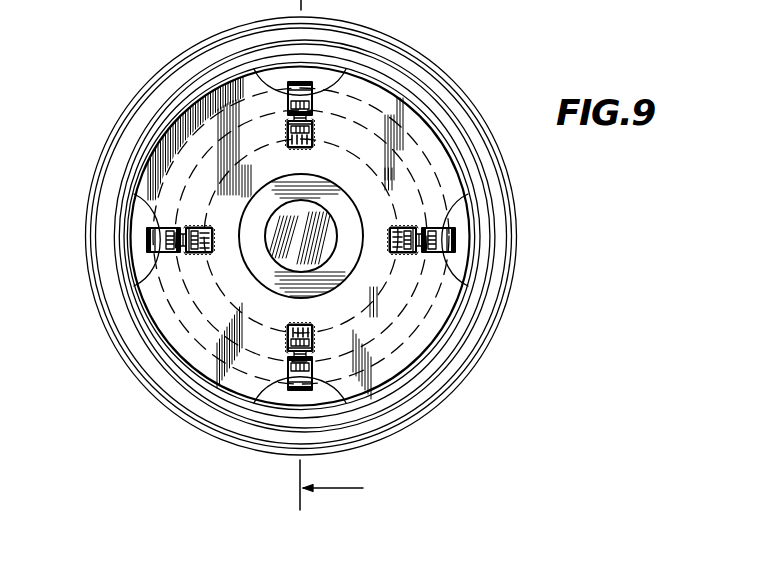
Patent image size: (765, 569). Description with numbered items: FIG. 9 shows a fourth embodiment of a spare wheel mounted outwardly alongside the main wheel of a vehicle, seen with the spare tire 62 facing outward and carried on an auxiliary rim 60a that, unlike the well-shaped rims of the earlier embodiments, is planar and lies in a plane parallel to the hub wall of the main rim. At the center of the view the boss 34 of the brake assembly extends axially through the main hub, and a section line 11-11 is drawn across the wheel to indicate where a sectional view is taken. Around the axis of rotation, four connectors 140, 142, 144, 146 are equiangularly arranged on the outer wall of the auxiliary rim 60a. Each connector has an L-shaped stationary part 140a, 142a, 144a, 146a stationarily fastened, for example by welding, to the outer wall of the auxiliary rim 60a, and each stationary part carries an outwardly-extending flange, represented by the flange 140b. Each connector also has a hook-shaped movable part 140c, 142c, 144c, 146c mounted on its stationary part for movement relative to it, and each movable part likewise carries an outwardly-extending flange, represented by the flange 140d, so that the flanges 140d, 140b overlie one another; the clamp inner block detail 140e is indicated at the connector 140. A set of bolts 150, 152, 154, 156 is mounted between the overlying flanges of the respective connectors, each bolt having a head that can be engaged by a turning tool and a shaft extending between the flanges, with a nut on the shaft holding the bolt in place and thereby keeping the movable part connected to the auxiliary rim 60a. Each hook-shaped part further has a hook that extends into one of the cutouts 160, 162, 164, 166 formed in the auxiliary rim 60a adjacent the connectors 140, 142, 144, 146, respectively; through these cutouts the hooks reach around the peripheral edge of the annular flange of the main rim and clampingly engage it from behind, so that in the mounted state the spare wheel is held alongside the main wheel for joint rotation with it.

The section line 11- 11 is at (355, 255).
The boss 34 is at (283, 258).
The auxiliary rim 60a is at (393, 185).
The spare tire 62 is at (172, 63).
The connector 140 is at (333, 110).
The L-shaped stationary part 140a is at (315, 120).
The outwardly-extending flange 140b is at (286, 150).
The hook-shaped movable part 140c is at (293, 82).
The outwardly-extending flange 140d is at (290, 96).
The clamp inner block detail 140e is at (318, 126).
The connector 142 is at (460, 240).
The L-shaped stationary part 142a is at (398, 228).
The hook-shaped movable part 142c is at (442, 224).
The connector 144 is at (302, 398).
The L-shaped stationary part 144a is at (310, 338).
The hook-shaped movable part 144c is at (380, 431).
The connector 146 is at (140, 242).
The L-shaped stationary part 146a is at (221, 219).
The hook-shaped movable part 146c is at (148, 233).
The bolt 150 is at (287, 124).
The bolt 152 is at (420, 257).
The bolt 154 is at (285, 353).
The bolt 156 is at (183, 257).
The cutout 160 is at (346, 69).
The cutout 162 is at (468, 286).
The cutout 164 is at (254, 403).
The cutout 166 is at (134, 286).